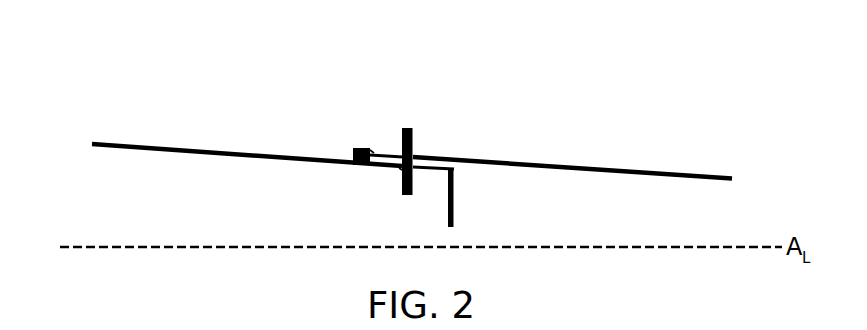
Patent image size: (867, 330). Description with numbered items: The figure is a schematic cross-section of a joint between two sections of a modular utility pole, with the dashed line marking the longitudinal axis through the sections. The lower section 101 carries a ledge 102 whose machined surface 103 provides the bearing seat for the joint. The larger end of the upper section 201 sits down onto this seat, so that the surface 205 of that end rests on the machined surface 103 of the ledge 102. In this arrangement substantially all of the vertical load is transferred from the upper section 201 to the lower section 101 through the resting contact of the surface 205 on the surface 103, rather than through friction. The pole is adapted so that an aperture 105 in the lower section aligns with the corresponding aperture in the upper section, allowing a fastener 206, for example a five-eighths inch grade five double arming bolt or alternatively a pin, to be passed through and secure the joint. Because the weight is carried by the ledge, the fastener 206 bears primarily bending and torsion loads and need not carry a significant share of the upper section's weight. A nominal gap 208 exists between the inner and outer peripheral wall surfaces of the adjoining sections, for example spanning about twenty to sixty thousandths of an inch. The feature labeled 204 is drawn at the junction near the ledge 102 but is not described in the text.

The lower section 101 is at (202, 150).
The ledge 102 is at (355, 152).
The machined surface 103 is at (383, 154).
The aperture 105 is at (400, 168).
The upper section 201 is at (573, 167).
The attachment joint 204 is at (373, 152).
The surface 205 is at (415, 156).
The fastener 206 is at (413, 130).
The nominal gap 208 is at (455, 165).